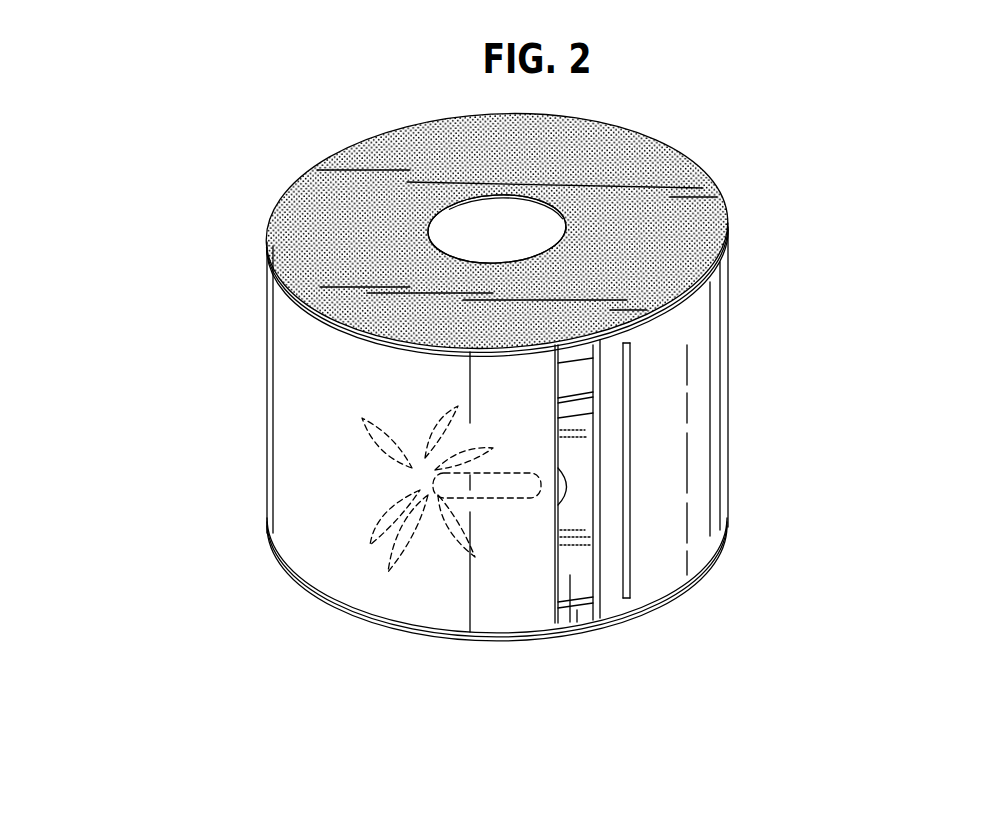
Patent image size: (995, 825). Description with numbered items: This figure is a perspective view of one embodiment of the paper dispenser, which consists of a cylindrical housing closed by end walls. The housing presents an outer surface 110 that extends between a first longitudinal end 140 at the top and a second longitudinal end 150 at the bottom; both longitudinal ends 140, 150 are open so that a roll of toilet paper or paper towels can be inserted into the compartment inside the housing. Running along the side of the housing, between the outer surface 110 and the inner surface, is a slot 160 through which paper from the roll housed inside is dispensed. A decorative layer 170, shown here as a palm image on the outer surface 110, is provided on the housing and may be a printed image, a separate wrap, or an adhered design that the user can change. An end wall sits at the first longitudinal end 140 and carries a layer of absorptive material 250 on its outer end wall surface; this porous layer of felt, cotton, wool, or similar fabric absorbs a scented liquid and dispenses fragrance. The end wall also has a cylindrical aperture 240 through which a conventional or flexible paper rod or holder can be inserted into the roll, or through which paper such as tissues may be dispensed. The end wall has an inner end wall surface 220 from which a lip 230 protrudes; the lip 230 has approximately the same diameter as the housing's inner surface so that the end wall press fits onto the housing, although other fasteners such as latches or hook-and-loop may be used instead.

The outer surface 110 is at (300, 390).
The first longitudinal end 140 is at (320, 290).
The second longitudinal end 150 is at (297, 585).
The slot 160 is at (741, 470).
The decorative layer 170 is at (405, 486).
The inner end wall surface 220 is at (570, 570).
The lip 230 is at (583, 617).
The aperture 240 is at (527, 218).
The layer of absorptive material 250 is at (318, 190).